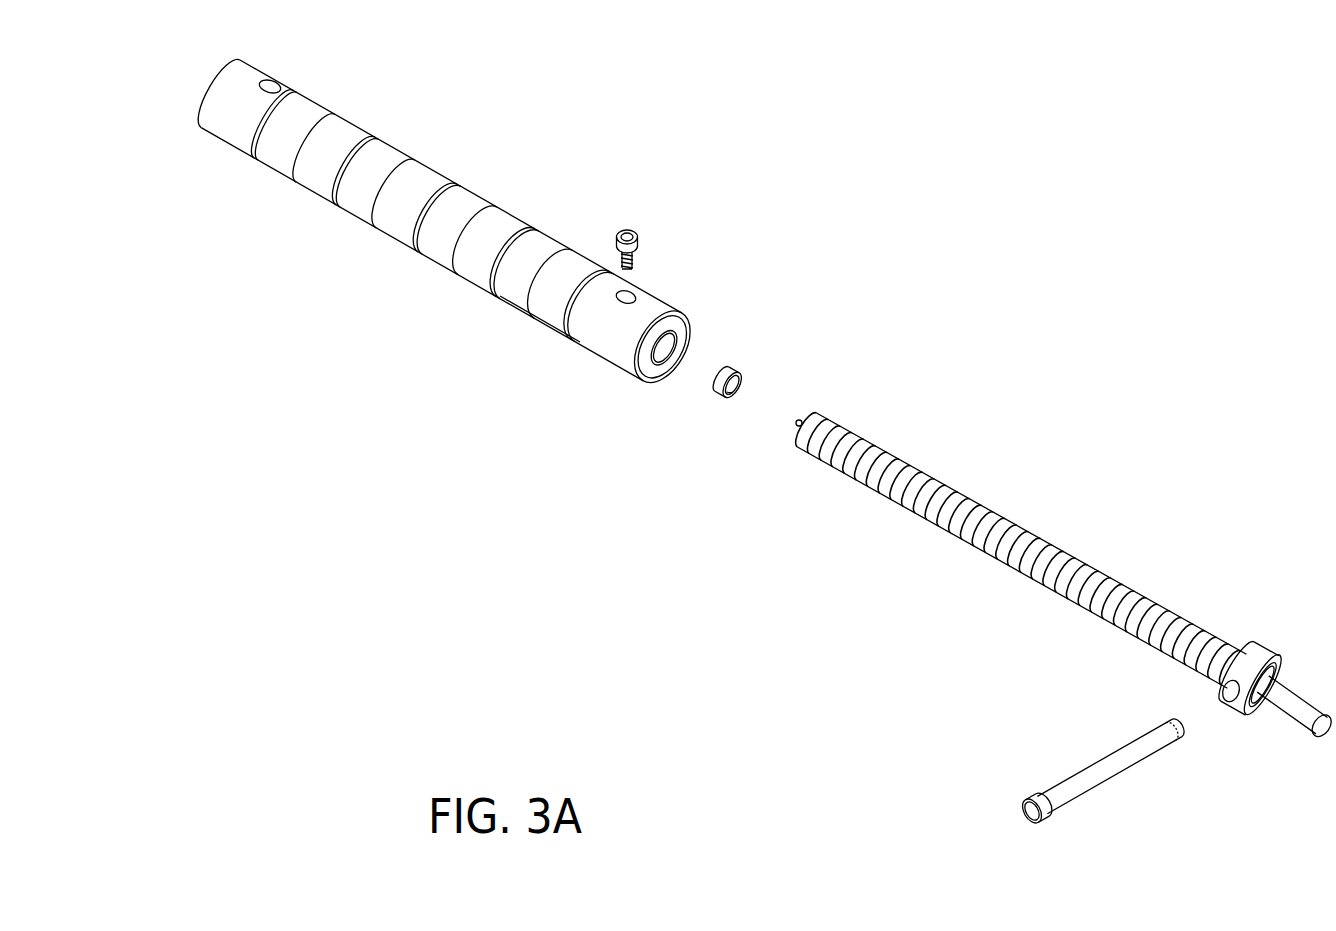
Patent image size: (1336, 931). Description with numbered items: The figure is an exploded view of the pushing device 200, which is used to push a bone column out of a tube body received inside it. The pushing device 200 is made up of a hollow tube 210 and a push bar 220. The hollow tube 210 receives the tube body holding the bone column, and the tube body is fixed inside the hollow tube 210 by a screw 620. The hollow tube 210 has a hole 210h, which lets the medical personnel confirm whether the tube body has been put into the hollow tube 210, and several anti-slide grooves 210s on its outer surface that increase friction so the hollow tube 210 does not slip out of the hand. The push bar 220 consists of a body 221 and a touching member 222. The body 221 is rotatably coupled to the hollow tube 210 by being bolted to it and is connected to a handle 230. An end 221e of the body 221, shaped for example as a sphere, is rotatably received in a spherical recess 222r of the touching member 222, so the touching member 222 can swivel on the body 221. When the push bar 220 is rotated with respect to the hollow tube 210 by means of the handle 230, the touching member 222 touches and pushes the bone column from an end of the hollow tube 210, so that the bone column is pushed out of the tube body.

The pushing device 200 is at (1256, 87).
The hollow tube 210 is at (450, 160).
The hole 210h is at (281, 84).
The anti-slide grooves 210s is at (540, 326).
The screw 620 is at (620, 230).
The push bar 220 is at (867, 283).
The touching member 222 is at (735, 362).
The spherical recess 222r is at (730, 396).
The body 221 is at (840, 425).
The end of the body 221e is at (797, 424).
The handle 230 is at (1118, 760).